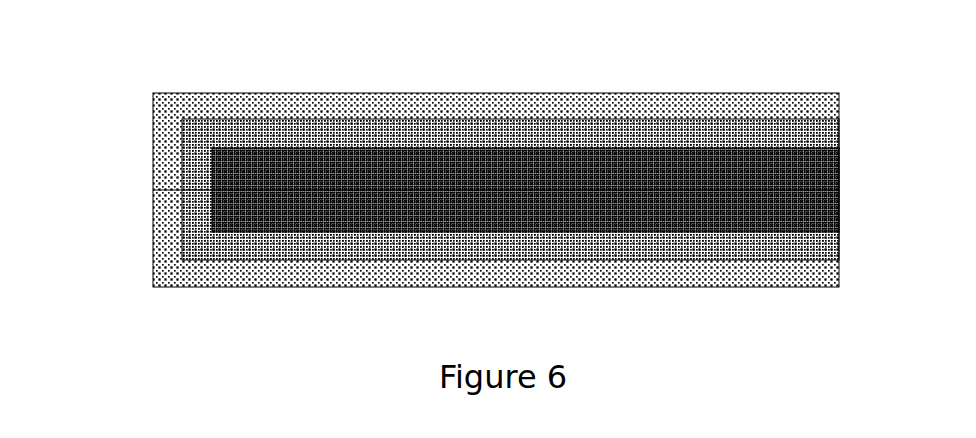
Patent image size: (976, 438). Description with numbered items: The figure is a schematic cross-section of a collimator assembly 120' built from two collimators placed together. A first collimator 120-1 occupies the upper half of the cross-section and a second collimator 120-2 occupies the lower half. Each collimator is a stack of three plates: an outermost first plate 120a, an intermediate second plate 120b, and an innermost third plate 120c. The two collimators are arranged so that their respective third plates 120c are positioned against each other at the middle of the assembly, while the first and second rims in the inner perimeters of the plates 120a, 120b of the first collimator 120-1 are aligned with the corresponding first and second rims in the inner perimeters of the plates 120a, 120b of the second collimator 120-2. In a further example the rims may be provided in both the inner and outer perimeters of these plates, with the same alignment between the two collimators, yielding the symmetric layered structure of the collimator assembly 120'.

The collimator assembly 120' is at (496, 158).
The first collimator 120-1 is at (131, 138).
The second collimator 120-2 is at (131, 238).
The first plate 120a is at (829, 100).
The second plate 120b is at (829, 128).
The third plate 120c is at (829, 165).